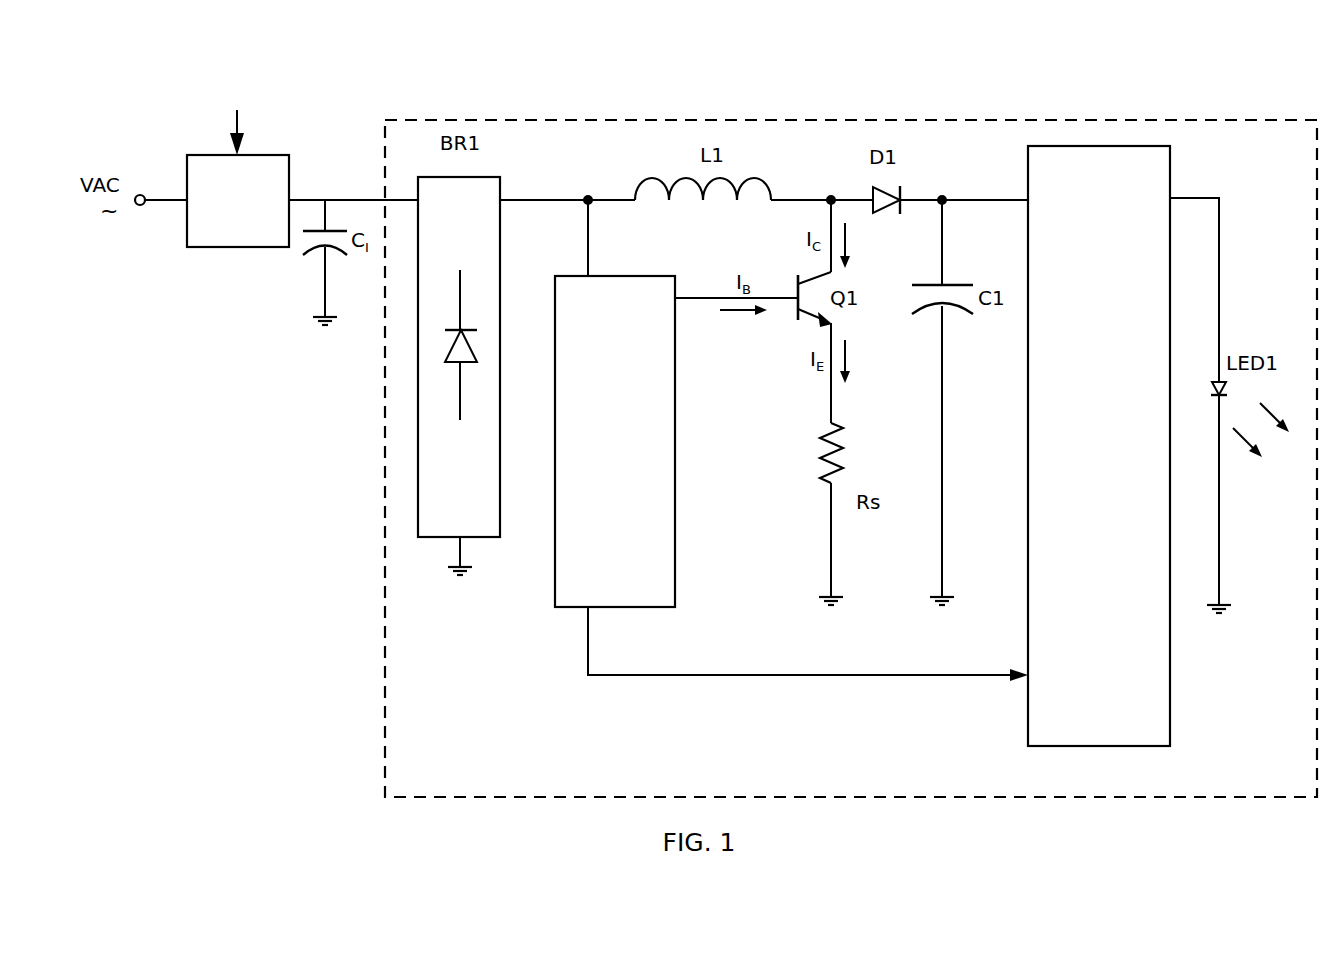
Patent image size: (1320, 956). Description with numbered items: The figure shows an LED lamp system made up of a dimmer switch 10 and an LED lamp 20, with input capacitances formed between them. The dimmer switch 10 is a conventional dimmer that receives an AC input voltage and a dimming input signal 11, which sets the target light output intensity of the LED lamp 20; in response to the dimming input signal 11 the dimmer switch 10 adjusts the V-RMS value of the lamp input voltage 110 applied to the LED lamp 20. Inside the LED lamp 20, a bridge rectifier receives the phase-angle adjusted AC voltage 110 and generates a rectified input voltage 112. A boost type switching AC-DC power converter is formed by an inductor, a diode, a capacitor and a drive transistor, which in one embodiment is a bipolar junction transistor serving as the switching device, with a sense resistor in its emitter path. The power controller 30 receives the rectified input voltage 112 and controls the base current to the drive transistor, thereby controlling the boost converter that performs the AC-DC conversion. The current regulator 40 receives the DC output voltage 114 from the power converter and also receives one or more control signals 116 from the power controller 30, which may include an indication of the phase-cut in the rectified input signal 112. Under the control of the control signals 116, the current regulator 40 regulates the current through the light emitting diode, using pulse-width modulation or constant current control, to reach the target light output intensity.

The dimmer switch 10 is at (238, 201).
The dimming input signal 11 is at (236, 118).
The LED lamp 20 is at (385, 763).
The power controller 30 is at (615, 441).
The current regulator 40 is at (1099, 446).
The lamp input voltage 110 is at (308, 200).
The rectified input voltage 112 is at (560, 199).
The DC output voltage 114 is at (938, 199).
The control signals 116 is at (702, 676).